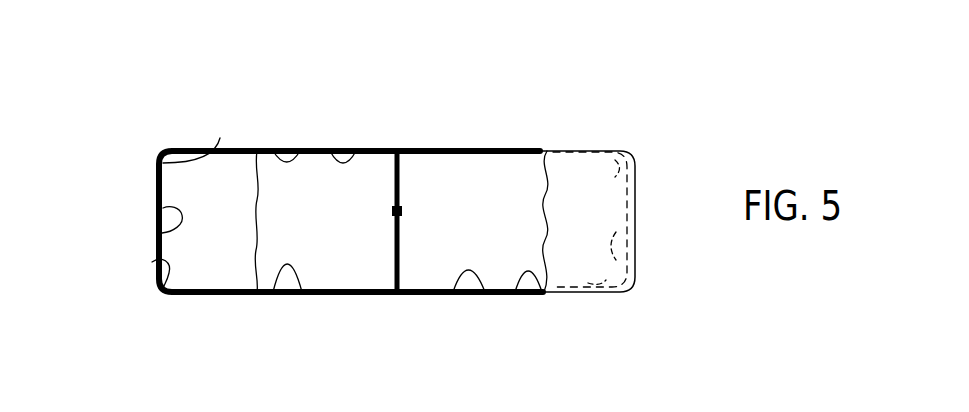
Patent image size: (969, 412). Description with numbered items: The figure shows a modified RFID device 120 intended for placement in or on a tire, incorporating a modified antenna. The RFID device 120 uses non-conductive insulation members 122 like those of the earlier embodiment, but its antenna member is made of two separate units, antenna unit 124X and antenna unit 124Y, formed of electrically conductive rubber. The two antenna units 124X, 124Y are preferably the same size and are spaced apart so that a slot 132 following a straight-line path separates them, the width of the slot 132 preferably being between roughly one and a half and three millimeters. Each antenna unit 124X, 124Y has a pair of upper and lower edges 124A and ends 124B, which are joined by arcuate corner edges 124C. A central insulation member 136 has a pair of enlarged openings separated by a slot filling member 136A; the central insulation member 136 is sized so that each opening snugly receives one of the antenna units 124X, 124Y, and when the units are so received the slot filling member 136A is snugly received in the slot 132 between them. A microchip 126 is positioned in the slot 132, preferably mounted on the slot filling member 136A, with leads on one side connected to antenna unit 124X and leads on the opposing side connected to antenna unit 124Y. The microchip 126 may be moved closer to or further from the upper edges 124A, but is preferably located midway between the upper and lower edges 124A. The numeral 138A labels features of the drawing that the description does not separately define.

The RFID device 120 is at (617, 121).
The non-conductive insulation member 122 is at (237, 206).
The upper and lower edges 124A is at (269, 151).
The ends 124B is at (162, 233).
The arcuate corner edges 124C is at (220, 138).
The antenna unit 124X is at (353, 206).
The antenna unit 124Y is at (533, 218).
The microchip 126 is at (400, 213).
The slot 132 is at (400, 256).
The central insulation member 136 is at (374, 292).
The slot filling member 136A is at (400, 183).
The tab portion 138A is at (348, 151).